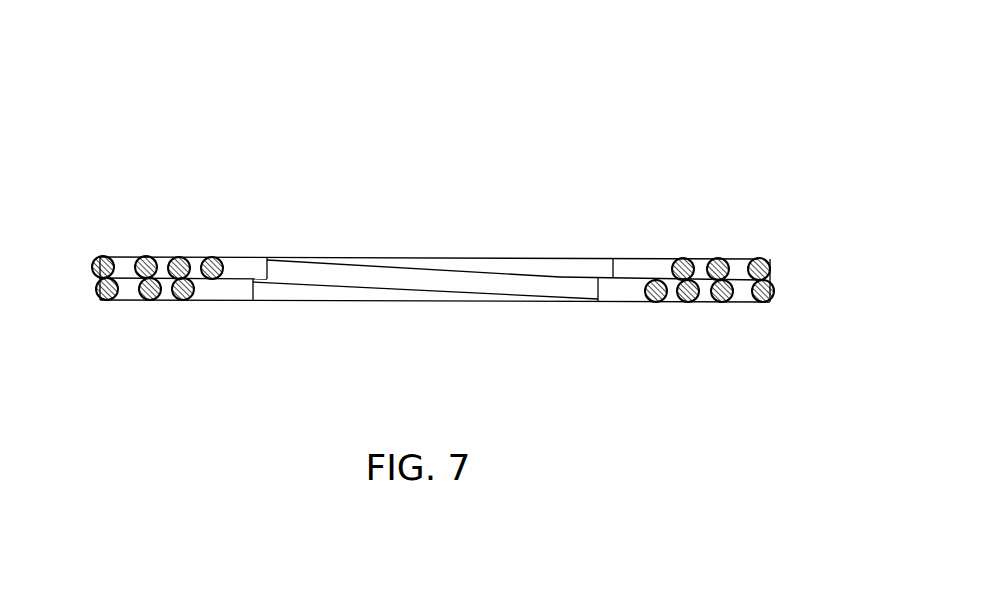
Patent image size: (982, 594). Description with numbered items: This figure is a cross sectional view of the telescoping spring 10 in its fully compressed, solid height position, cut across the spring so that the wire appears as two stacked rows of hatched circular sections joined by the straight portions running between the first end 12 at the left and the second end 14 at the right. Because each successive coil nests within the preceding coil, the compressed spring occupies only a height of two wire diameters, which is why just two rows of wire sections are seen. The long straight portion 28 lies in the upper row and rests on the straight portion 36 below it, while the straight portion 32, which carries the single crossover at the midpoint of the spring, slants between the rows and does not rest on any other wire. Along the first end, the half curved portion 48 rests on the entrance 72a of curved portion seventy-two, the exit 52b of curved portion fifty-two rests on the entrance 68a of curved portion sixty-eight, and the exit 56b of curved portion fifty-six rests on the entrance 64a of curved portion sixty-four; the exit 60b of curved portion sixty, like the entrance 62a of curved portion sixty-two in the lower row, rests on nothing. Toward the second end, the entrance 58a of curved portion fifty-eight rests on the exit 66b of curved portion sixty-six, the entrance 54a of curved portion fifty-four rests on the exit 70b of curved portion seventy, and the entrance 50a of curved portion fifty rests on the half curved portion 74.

The telescoping spring 10 is at (613, 129).
The first end 12 is at (108, 167).
The second end 14 is at (735, 403).
The straight portion 28 is at (494, 257).
The straight portion 32 is at (560, 277).
The straight portion 36 is at (310, 301).
The half curved portion 48 is at (103, 256).
The exit of curved portion 52 52b is at (147, 256).
The exit of curved portion 56 56b is at (178, 257).
The exit of curved portion 60 60b is at (212, 257).
The entrance of curved portion 50 50a is at (759, 258).
The entrance of curved portion 54 54a is at (718, 258).
The entrance of curved portion 58 58a is at (684, 258).
The entrance of curved portion 72 72a is at (107, 300).
The entrance of curved portion 68 68a is at (150, 300).
The entrance of curved portion 64 64a is at (183, 300).
The entrance of curved portion 62 62a is at (655, 302).
The exit of curved portion 66 66b is at (688, 302).
The exit of curved portion 70 70b is at (722, 302).
The half curved portion 74 is at (764, 302).